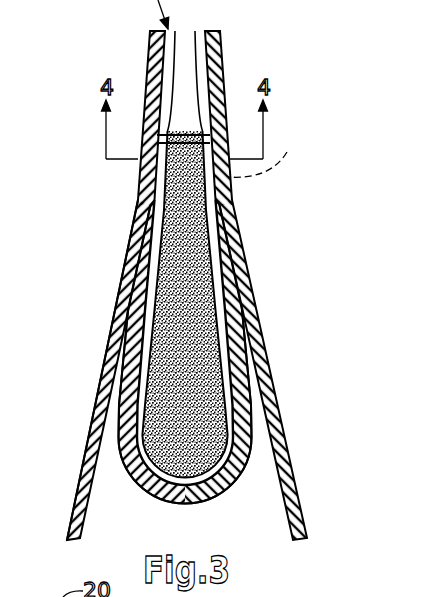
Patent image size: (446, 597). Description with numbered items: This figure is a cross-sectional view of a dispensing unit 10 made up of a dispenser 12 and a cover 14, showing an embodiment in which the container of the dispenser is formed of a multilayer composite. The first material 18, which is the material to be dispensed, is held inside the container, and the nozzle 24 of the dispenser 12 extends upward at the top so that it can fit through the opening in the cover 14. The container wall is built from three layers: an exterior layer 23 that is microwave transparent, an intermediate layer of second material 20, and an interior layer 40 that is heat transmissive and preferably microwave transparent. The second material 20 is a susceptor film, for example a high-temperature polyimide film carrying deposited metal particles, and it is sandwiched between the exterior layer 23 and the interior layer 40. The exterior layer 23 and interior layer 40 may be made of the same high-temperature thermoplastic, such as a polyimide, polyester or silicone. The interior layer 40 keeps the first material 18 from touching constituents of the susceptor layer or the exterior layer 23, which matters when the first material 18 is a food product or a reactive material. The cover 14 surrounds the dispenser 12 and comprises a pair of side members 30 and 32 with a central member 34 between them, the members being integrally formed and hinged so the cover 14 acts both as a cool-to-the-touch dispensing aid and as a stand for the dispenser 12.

The dispensing unit 10 is at (189, 271).
The dispenser 12 is at (222, 88).
The cover 14 is at (133, 217).
The first material 18 is at (175, 304).
The second material 20 is at (248, 340).
The exterior layer 23 is at (245, 383).
The nozzle 24 is at (190, 31).
The side member 30 is at (76, 504).
The side member 32 is at (297, 480).
The central member 34 is at (270, 152).
The interior layer 40 is at (148, 325).